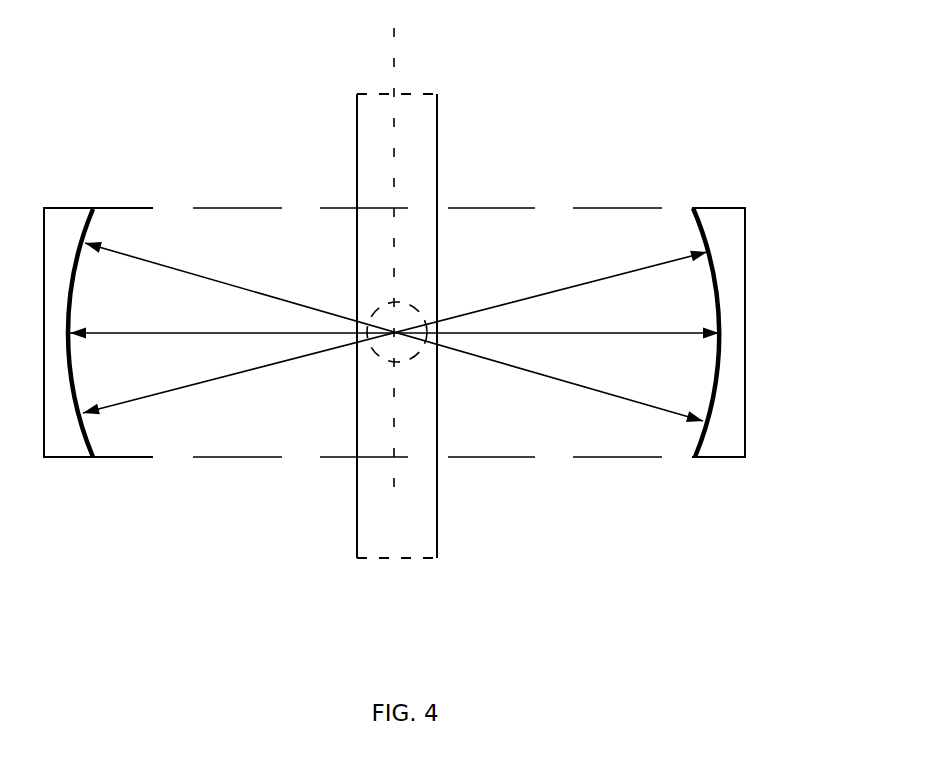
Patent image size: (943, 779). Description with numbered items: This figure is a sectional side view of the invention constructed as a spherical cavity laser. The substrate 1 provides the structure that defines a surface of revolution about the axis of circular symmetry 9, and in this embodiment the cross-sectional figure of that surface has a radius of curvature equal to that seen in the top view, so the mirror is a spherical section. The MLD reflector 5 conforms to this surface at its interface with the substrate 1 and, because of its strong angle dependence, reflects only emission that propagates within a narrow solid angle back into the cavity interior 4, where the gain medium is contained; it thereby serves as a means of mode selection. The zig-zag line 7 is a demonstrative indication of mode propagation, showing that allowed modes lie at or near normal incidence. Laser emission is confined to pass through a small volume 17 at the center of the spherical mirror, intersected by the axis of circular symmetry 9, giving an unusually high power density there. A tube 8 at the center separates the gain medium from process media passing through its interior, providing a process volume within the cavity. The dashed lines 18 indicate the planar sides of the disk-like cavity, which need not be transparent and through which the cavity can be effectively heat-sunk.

The substrate 1 is at (745, 432).
The cavity interior 4 is at (427, 240).
The MLD reflector 5 is at (737, 295).
The zig-zag line 7 is at (500, 381).
The tube 8 is at (343, 517).
The axis of circular symmetry 9 is at (413, 61).
The small volume 17 is at (364, 366).
The dashed lines 18 is at (593, 474).